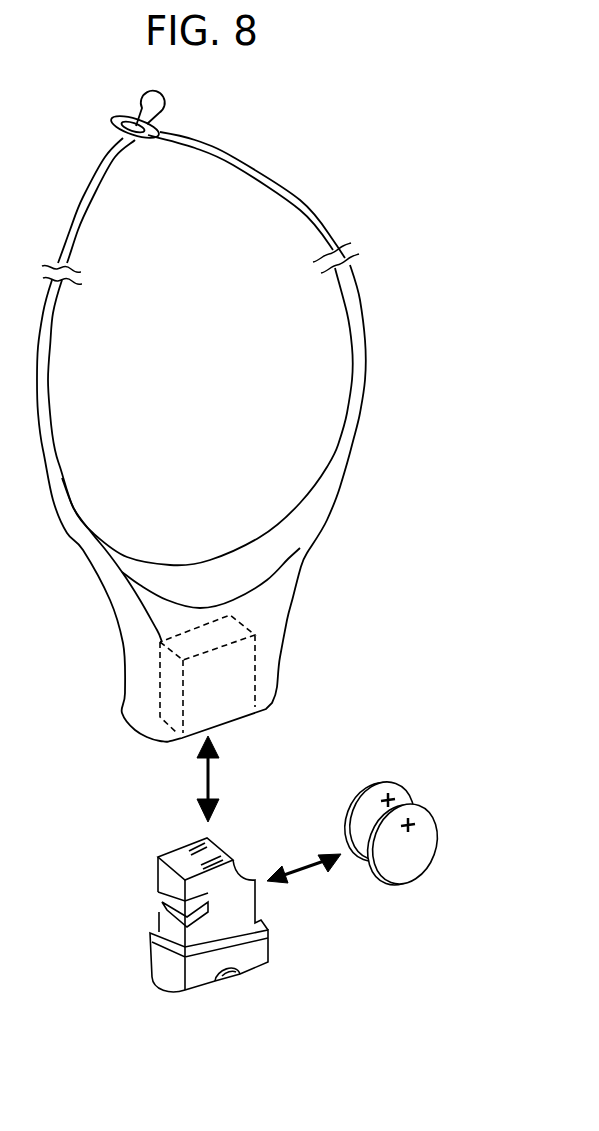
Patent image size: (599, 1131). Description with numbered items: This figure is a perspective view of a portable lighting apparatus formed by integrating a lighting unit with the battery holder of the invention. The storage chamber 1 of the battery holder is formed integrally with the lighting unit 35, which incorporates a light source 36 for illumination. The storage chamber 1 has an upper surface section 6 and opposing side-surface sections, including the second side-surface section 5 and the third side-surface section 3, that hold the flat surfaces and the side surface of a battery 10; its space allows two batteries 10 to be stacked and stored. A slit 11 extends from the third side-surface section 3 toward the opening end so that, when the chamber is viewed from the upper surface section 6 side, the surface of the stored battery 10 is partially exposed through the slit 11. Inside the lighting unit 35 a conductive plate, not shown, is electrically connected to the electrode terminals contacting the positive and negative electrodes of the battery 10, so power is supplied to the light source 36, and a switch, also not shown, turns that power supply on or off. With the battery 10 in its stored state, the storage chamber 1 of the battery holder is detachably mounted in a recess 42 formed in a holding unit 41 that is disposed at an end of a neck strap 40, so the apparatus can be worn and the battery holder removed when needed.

The storage chamber 1 is at (248, 845).
The third side-surface section 3 is at (158, 917).
The second side-surface section 5 is at (182, 858).
The upper surface section 6 is at (248, 902).
The battery 10 is at (405, 793).
The slit 11 is at (160, 892).
The lighting unit 35 is at (262, 945).
The light source 36 is at (228, 976).
The neck strap 40 is at (262, 175).
The holding unit 41 is at (287, 622).
The recess 42 is at (242, 677).